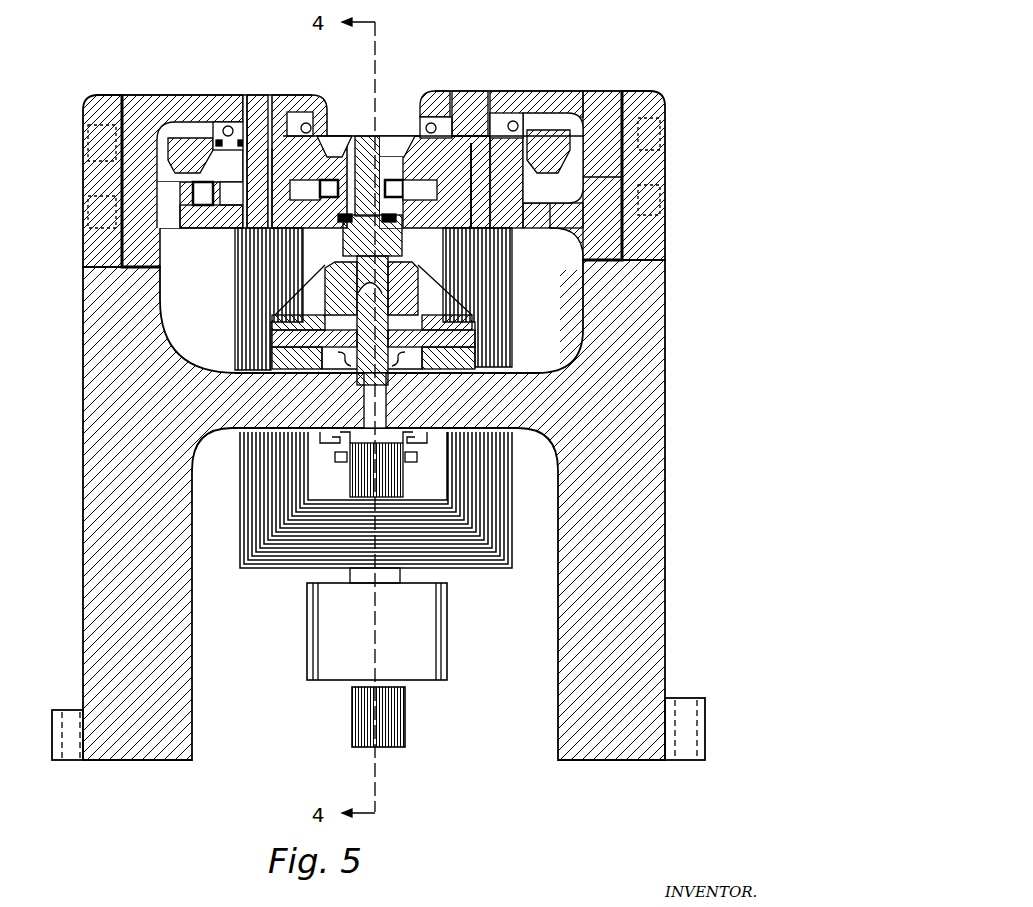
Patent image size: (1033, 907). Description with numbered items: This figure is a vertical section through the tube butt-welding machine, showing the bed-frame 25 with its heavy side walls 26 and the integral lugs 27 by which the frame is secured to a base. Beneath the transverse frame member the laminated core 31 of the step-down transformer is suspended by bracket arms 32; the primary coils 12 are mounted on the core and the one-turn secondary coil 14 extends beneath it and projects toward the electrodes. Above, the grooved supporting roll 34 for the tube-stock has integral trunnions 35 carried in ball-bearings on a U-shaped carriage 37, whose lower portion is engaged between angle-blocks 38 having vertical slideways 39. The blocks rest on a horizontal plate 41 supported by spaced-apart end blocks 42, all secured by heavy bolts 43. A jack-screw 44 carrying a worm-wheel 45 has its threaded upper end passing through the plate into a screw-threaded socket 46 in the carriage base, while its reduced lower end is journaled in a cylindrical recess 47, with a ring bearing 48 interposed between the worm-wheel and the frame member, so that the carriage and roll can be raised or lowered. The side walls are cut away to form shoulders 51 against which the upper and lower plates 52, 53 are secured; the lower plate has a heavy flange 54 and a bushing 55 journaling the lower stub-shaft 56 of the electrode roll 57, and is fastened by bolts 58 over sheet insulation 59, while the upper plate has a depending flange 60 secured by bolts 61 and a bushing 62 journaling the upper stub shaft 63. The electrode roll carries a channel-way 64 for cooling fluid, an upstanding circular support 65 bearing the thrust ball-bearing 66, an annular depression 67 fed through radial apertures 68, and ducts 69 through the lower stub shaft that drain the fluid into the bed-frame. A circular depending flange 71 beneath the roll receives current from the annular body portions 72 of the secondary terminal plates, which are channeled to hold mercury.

The primary coils 12 is at (340, 623).
The one-turn secondary coil 14 is at (493, 505).
The bed-frame 25 is at (137, 430).
The side walls 26 is at (632, 620).
The lugs 27 is at (707, 707).
The laminated core 31 is at (363, 710).
The bracket arms 32 is at (413, 443).
The supporting roll 34 is at (370, 167).
The trunnions 35 is at (340, 233).
The U-shaped carriage 37 is at (340, 277).
The angle-blocks 38 is at (422, 298).
The vertical slideways 39 is at (455, 322).
The horizontal plate 41 is at (395, 333).
The end blocks 42 is at (237, 377).
The heavy bolts 43 is at (378, 318).
The jack-screw 44 is at (452, 360).
The worm-wheel 45 is at (400, 357).
The screw-threaded socket 46 is at (360, 298).
The cylindrical recess 47 is at (373, 385).
The ring bearing 48 is at (382, 367).
The shoulders 51 is at (598, 263).
The upper plate 52 is at (573, 100).
The lower plate 53 is at (627, 233).
The heavy flanges 54 is at (630, 255).
The bushings 55 is at (340, 214).
The lower stub-shaft 56 is at (183, 230).
The electrode rolls 57 is at (122, 115).
The bolts 58 is at (660, 198).
The sheet insulation 59 is at (160, 200).
The depending flanges 60 is at (603, 167).
The bolts 61 is at (650, 133).
The bushings 62 is at (247, 97).
The upper stub shafts 63 is at (268, 97).
The channel-way 64 is at (195, 152).
The upstanding circular support 65 is at (527, 133).
The thrust ball-bearing 66 is at (450, 138).
The annular depression 67 is at (452, 140).
The radial apertures 68 is at (215, 140).
The ducts 69 is at (281, 143).
The circular depending flange 71 is at (193, 190).
The annular body portions 72 is at (255, 193).